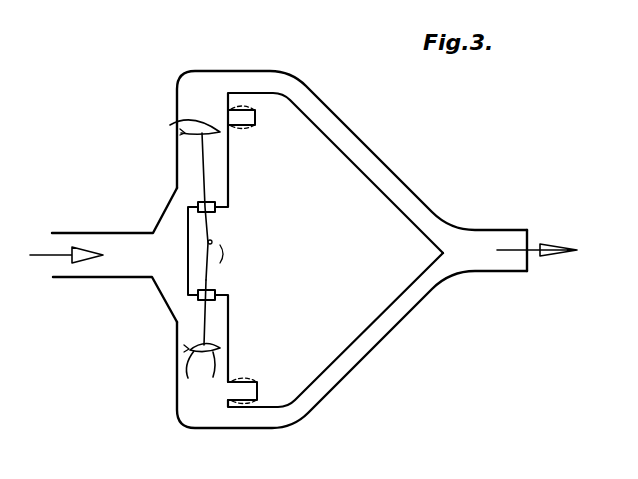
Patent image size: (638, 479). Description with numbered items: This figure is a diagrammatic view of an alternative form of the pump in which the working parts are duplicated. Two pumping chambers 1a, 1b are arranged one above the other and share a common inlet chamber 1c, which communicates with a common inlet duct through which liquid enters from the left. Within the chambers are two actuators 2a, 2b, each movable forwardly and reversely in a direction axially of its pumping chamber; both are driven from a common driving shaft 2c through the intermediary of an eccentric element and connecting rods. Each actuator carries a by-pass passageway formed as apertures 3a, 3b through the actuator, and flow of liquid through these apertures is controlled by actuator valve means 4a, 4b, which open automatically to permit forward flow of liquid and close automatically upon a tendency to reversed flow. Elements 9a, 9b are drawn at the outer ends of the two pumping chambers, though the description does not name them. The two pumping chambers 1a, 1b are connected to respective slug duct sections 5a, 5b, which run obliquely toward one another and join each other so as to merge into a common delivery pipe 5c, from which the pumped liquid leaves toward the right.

The pumping chamber 1a is at (230, 161).
The pumping chamber 1b is at (228, 313).
The common inlet chamber 1c is at (168, 242).
The actuator 2a is at (205, 130).
The actuator 2b is at (225, 348).
The common driving shaft 2c is at (205, 253).
The apertures 3a is at (187, 136).
The apertures 3b is at (188, 347).
The actuator valve means 4a is at (171, 125).
The actuator valve means 4b is at (213, 377).
The slug duct section 5a is at (355, 146).
The slug duct section 5b is at (390, 327).
The common delivery pipe 5c is at (488, 237).
The upper stop 9a is at (255, 121).
The lower stop 9b is at (257, 383).